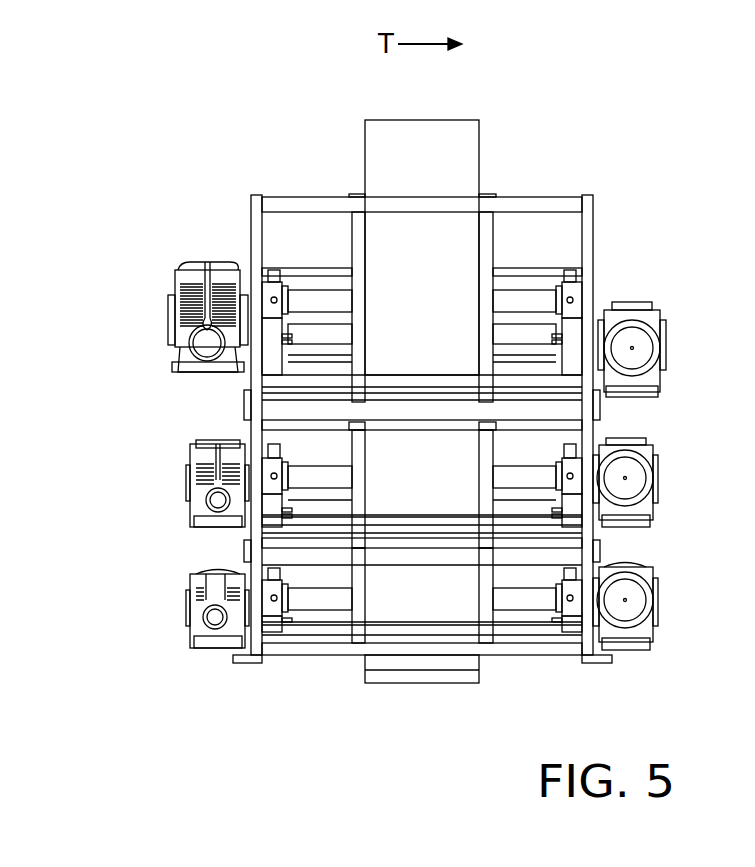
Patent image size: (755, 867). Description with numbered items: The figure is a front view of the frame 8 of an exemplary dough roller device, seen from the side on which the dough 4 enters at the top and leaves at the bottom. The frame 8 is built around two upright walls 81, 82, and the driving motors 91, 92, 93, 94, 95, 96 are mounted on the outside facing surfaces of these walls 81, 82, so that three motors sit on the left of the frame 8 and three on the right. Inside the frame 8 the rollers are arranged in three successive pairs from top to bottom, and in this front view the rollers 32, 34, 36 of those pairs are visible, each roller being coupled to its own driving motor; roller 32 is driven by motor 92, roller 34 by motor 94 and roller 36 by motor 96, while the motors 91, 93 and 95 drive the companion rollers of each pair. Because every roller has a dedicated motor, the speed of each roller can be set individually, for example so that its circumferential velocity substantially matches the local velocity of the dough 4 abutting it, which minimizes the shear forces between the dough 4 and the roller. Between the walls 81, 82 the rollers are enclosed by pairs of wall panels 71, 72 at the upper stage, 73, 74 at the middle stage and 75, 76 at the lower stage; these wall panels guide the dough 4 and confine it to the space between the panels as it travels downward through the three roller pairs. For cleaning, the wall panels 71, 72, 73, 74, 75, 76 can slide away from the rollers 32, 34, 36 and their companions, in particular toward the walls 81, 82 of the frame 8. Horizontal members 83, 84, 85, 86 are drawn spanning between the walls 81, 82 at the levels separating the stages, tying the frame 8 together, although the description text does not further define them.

The dough 4 is at (414, 135).
The frame 8 is at (218, 712).
The roller 32 is at (445, 245).
The roller 34 is at (463, 497).
The roller 36 is at (467, 602).
The wall panel 71 is at (352, 245).
The wall panel 72 is at (493, 245).
The wall panel 73 is at (360, 448).
The wall panel 74 is at (483, 465).
The wall panel 75 is at (360, 570).
The wall panel 76 is at (483, 577).
The wall 81 is at (252, 225).
The wall 82 is at (592, 235).
The cross beam 83 is at (250, 422).
The cross beam 84 is at (595, 422).
The cross beam 85 is at (250, 555).
The cross beam 86 is at (595, 578).
The driving motor 91 is at (640, 343).
The driving motor 92 is at (195, 273).
The driving motor 93 is at (637, 473).
The driving motor 94 is at (212, 453).
The driving motor 95 is at (640, 598).
The driving motor 96 is at (218, 588).